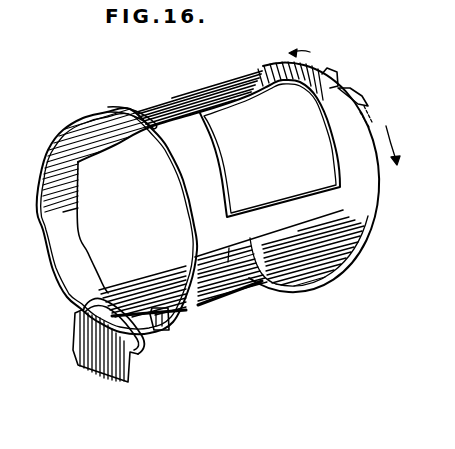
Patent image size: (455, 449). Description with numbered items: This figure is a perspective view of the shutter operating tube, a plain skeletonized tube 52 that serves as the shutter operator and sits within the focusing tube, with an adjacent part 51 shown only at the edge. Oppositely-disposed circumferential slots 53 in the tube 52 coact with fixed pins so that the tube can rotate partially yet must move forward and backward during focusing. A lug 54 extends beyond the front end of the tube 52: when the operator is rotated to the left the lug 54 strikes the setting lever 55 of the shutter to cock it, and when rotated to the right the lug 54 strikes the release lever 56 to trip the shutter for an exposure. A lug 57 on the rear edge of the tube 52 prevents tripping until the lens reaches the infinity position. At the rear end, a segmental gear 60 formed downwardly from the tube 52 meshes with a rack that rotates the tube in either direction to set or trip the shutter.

The adjacent component (partial) 51 is at (396, 5).
The shutter operator tube 52 is at (262, 70).
The circumferential slots 53 is at (129, 108).
The lug 54 is at (360, 96).
The setting lever 55 is at (333, 70).
The release lever 56 is at (376, 118).
The lug 57 is at (162, 332).
The segmental gear 60 is at (98, 382).